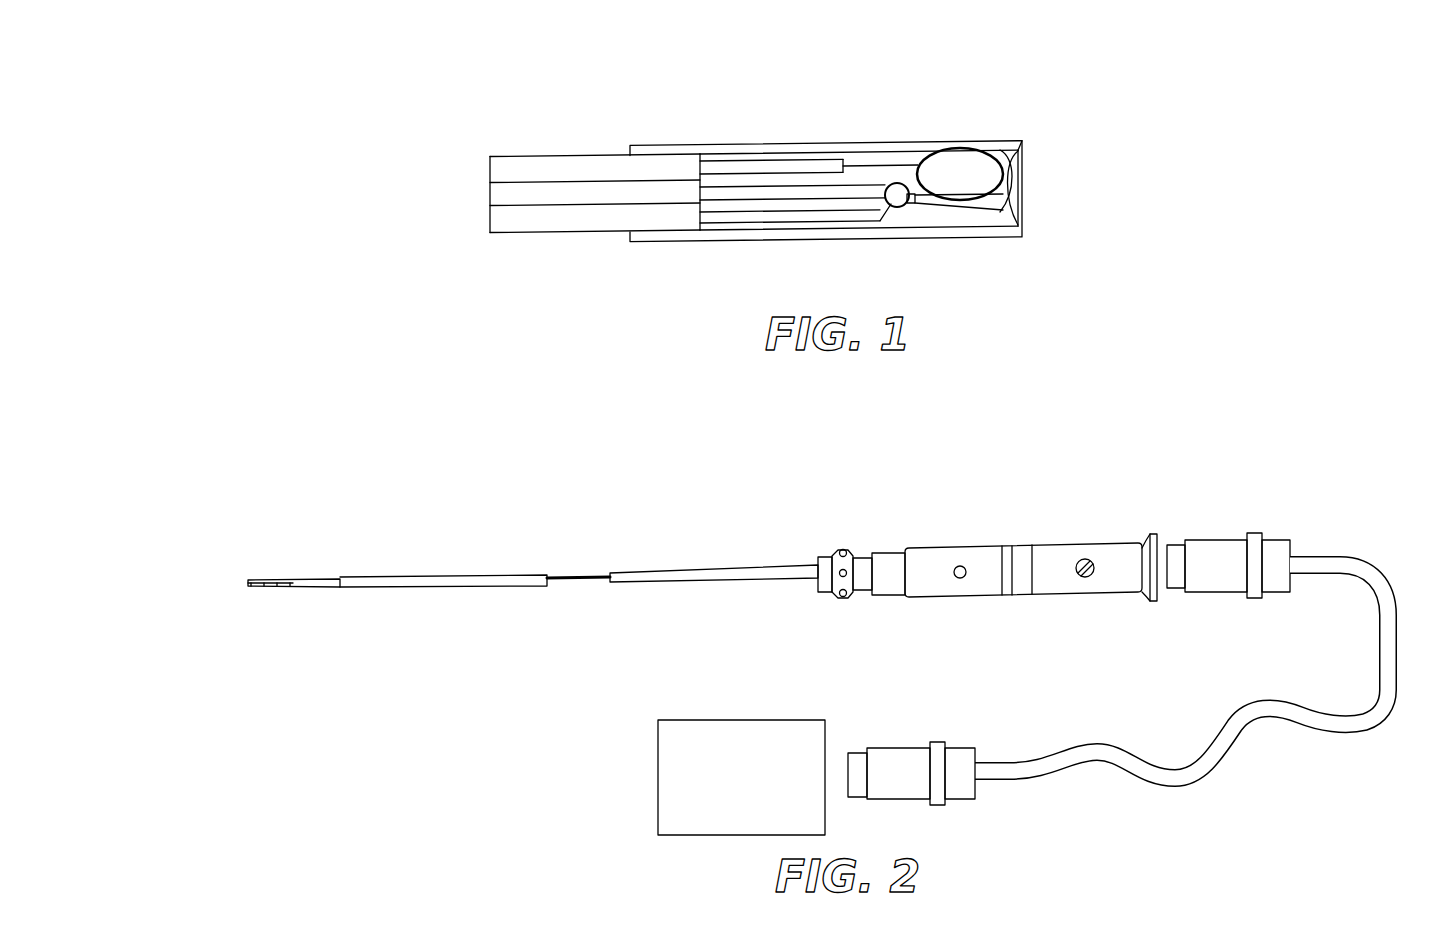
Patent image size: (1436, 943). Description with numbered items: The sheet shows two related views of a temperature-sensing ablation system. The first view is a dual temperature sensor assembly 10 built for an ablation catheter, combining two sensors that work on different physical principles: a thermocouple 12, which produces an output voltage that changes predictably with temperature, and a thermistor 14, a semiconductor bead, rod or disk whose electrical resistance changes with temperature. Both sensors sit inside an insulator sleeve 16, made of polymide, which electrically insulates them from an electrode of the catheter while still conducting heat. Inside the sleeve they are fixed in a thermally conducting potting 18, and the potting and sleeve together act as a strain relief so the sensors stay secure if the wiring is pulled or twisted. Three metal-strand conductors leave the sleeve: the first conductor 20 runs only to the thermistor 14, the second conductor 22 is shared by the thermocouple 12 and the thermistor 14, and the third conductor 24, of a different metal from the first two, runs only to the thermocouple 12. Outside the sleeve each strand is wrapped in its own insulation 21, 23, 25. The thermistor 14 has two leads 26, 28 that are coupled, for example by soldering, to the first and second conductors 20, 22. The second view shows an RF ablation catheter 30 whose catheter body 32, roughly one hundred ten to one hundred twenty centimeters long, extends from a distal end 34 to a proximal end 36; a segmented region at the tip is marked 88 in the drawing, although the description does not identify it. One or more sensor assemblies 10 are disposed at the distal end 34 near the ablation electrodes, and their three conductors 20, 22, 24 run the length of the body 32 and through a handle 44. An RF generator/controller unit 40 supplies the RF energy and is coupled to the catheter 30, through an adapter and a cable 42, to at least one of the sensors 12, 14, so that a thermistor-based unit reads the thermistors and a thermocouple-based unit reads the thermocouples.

In FIG. 1, the dual temperature sensor assembly 10 is at (586, 97).
In FIG. 1, the thermocouple 12 is at (901, 208).
In FIG. 1, the thermistor 14 is at (1003, 148).
In FIG. 1, the insulator sleeve 16 is at (690, 145).
In FIG. 1, the thermally conducting potting 18 is at (873, 175).
In FIG. 1, the first conductor 20 is at (820, 166).
In FIG. 1, the insulation 21 is at (561, 163).
In FIG. 1, the second conductor 22 is at (808, 196).
In FIG. 1, the insulation 23 is at (607, 196).
In FIG. 1, the third conductor 24 is at (760, 220).
In FIG. 1, the insulation 25 is at (522, 222).
In FIG. 1, the thermistor lead 26 is at (900, 173).
In FIG. 1, the thermistor lead 28 is at (988, 205).
In FIG. 2, the RF ablation catheter 30 is at (1088, 485).
In FIG. 2, the catheter body 32 is at (612, 584).
In FIG. 2, the distal end 34 is at (295, 580).
In FIG. 2, the proximal end 36 is at (808, 550).
In FIG. 2, the RF generator/controller unit 40 is at (658, 745).
In FIG. 2, the cable 42 is at (1248, 746).
In FIG. 2, the handle 44 is at (1142, 612).
In FIG. 2, the electrodes 88 is at (298, 597).